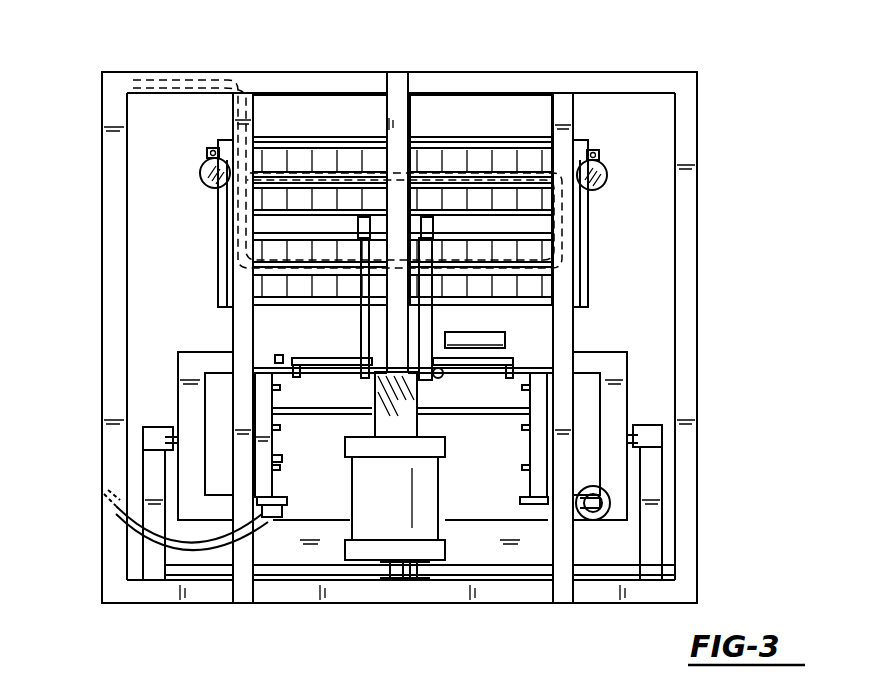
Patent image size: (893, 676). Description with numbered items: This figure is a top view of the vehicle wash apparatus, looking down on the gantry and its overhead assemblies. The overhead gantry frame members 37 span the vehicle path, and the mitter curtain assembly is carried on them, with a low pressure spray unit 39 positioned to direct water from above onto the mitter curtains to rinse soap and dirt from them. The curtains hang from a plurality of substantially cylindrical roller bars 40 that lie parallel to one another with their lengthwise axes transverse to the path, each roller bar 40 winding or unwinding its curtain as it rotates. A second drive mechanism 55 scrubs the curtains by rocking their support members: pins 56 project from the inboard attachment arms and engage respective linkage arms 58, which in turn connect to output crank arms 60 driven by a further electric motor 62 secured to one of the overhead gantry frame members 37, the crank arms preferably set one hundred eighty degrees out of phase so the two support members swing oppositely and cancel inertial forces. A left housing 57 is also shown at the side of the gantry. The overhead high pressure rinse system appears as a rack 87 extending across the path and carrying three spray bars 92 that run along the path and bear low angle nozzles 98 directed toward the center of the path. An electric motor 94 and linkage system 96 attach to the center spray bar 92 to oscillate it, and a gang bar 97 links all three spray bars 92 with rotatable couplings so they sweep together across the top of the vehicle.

The overhead gantry frame members 37 is at (398, 105).
The low pressure spray unit 39 is at (250, 176).
The roller bars 40 is at (287, 193).
The second drive mechanism 55 is at (430, 577).
The pins 56 is at (380, 213).
The left housing 57 is at (185, 414).
The linkage arm 58 is at (362, 322).
The output crank arms 60 is at (367, 385).
The further electric motor 62 is at (388, 530).
The rack 87 is at (612, 372).
The spray bars 92 is at (593, 440).
The electric motor 94 is at (500, 337).
The linkage system 96 is at (441, 378).
The gang bar 97 is at (472, 415).
The low angle nozzles 98 is at (275, 457).